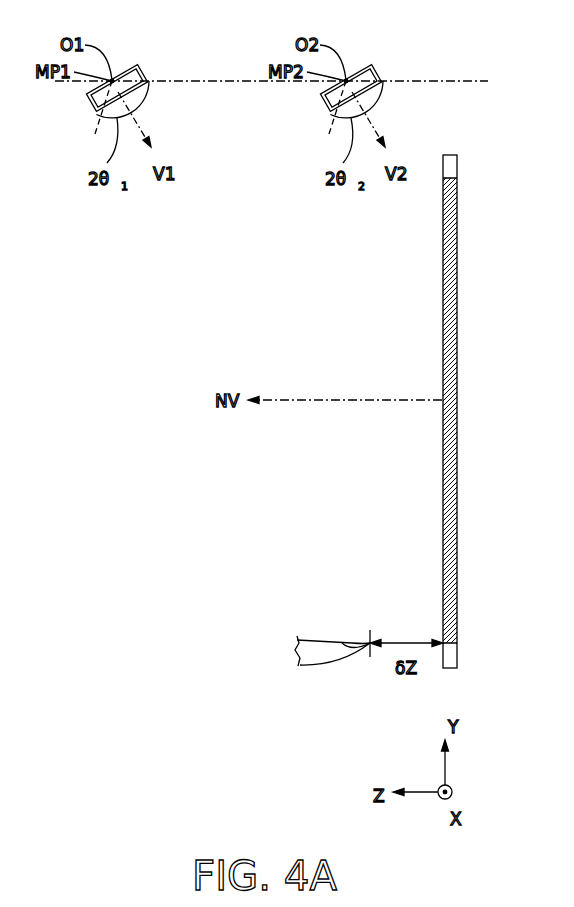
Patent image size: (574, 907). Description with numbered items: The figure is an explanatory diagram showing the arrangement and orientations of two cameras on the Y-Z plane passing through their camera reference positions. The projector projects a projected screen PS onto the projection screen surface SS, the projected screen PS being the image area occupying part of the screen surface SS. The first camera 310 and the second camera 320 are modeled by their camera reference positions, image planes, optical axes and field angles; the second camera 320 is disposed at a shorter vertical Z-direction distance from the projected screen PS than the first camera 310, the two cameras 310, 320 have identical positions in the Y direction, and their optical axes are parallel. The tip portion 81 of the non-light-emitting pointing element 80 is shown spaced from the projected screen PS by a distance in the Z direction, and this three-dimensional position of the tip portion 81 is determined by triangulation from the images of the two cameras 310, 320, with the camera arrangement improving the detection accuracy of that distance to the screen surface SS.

The first camera 310 is at (138, 66).
The second camera 320 is at (372, 66).
The non-light-emitting pointing element 80 is at (325, 650).
The tip portion 81 is at (370, 643).
The projection screen surface SS is at (443, 167).
The projected screen PS is at (442, 458).